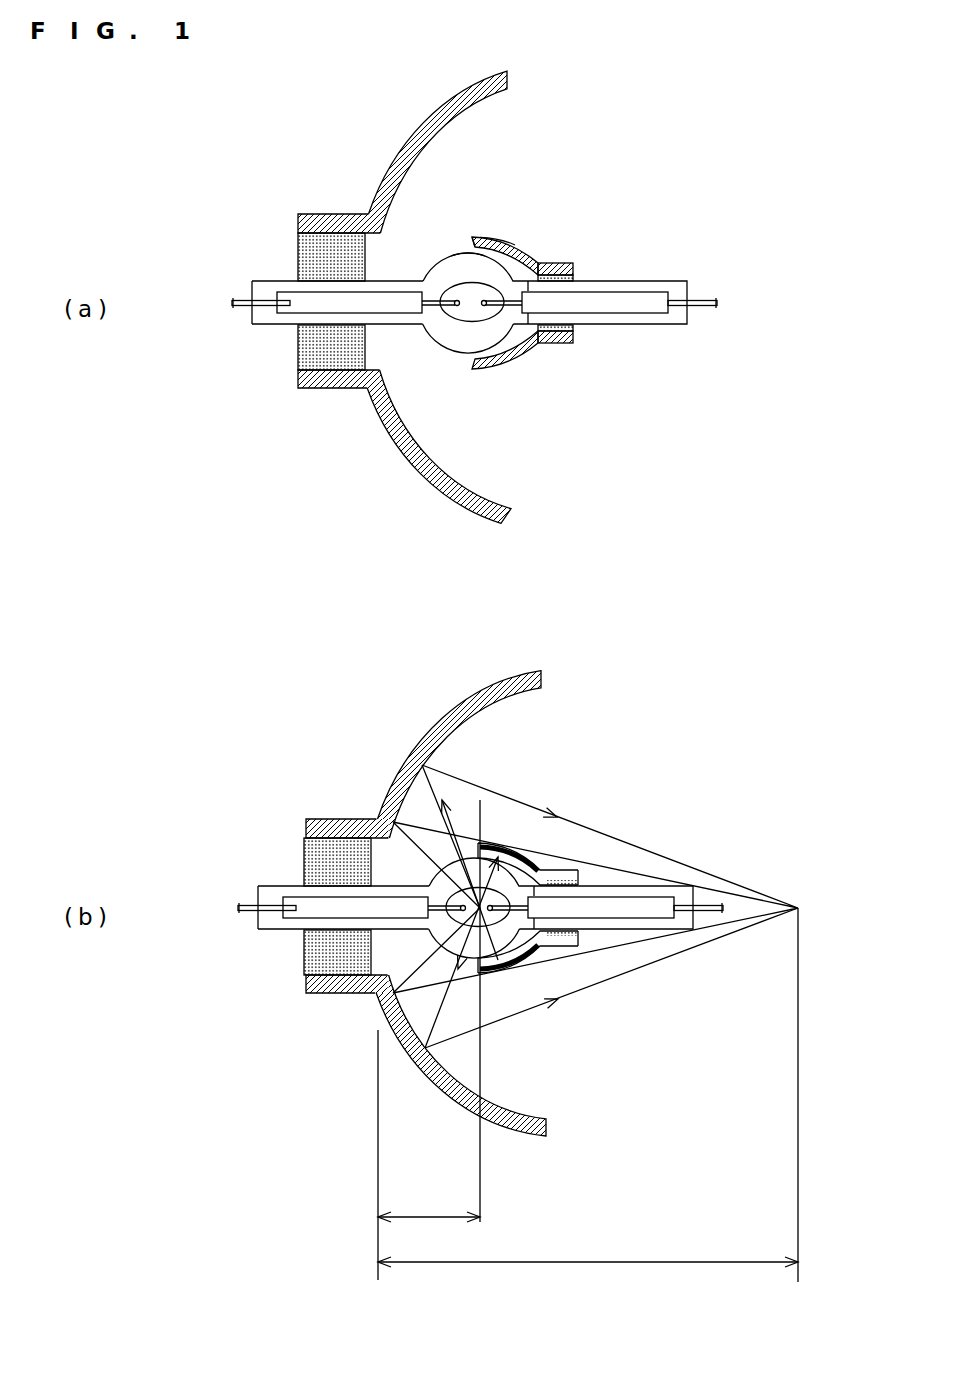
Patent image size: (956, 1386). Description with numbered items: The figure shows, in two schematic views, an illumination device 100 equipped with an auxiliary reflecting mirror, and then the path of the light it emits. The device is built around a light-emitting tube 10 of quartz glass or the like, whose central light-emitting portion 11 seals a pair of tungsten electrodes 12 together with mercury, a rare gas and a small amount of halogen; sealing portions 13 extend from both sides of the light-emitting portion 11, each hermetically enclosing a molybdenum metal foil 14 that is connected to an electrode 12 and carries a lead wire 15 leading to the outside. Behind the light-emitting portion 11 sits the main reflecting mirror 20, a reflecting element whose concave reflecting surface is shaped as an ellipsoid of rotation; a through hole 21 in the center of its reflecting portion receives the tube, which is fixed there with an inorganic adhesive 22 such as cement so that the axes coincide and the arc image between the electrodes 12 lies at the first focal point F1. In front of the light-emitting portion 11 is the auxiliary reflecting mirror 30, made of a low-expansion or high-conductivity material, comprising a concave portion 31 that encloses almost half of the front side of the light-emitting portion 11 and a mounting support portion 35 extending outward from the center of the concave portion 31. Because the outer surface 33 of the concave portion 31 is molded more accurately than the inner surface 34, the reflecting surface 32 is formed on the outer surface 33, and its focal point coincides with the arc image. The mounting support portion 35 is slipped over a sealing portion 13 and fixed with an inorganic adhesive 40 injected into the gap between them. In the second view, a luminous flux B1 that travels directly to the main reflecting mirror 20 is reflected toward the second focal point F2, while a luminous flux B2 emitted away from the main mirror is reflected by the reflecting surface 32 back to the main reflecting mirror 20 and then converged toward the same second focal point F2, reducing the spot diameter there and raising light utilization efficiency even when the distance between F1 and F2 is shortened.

The illumination device 100 is at (242, 163).
The light-emitting tube 10 is at (472, 603).
The light-emitting portion 11 is at (498, 352).
The electrode 12 is at (486, 306).
The sealing portion 13 is at (270, 281).
The metal foil 14 is at (300, 303).
The lead wire 15 is at (240, 306).
The main reflecting mirror 20 is at (405, 145).
The through hole 21 is at (301, 238).
The inorganic adhesive 22 is at (296, 262).
The auxiliary reflecting mirror 30 is at (528, 511).
The concave portion 31 is at (512, 242).
The reflecting surface 32 is at (473, 239).
The outer surface 33 is at (490, 238).
The inner surface 34 is at (466, 256).
The mounting support portion 35 is at (560, 263).
The inorganic adhesive 40 is at (573, 340).
The luminous flux B1 is at (505, 788).
The luminous flux B2 is at (492, 864).
The first focal point F1 is at (436, 1040).
The second focal point F2 is at (596, 1110).